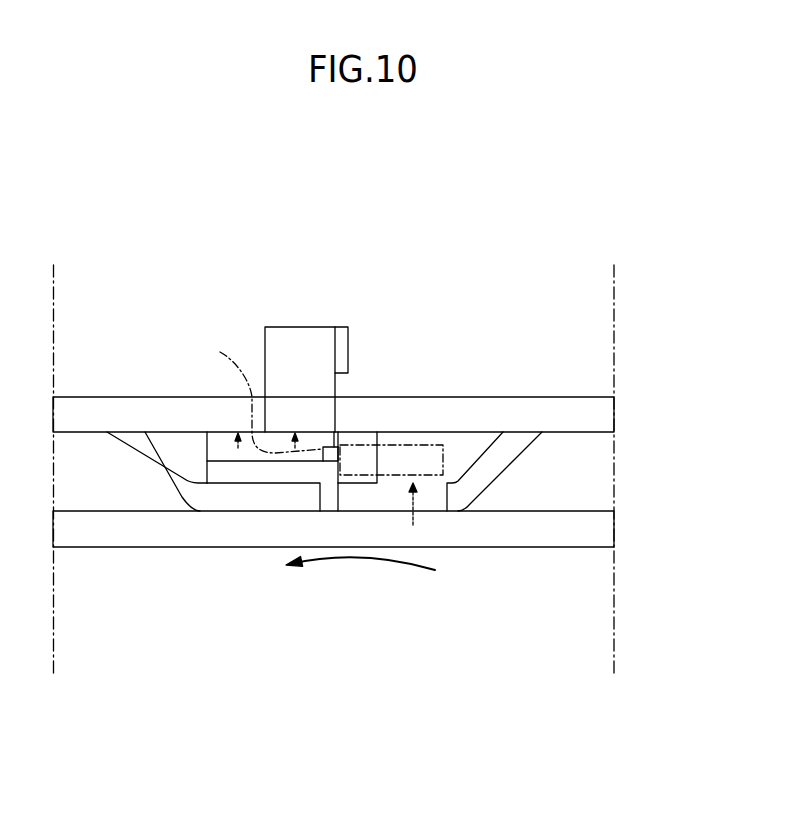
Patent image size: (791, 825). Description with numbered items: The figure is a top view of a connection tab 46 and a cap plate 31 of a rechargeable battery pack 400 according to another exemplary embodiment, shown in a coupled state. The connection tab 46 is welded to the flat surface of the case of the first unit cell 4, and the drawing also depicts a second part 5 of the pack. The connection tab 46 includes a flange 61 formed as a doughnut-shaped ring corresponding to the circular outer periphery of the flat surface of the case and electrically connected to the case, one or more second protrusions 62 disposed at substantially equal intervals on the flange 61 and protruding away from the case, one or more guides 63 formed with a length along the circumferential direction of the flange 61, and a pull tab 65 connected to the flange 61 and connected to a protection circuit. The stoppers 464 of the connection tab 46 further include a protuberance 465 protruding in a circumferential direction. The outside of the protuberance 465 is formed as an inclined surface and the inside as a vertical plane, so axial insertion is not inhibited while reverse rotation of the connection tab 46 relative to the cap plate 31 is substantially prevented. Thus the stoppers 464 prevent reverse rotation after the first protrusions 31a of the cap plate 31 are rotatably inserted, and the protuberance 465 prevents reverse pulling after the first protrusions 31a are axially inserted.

The rechargeable battery pack 400 is at (337, 173).
The first unit cell 4 is at (583, 364).
The lower body 5 is at (583, 566).
The connection tab 46 is at (635, 414).
The cap plate 31 is at (635, 521).
The first protrusions 31a is at (224, 440).
The flange 61 is at (505, 413).
The second protrusions 62 is at (150, 465).
The guides 63 is at (230, 497).
The pull tab 65 is at (314, 340).
The stoppers 464 is at (358, 468).
The protuberance 465 is at (333, 478).